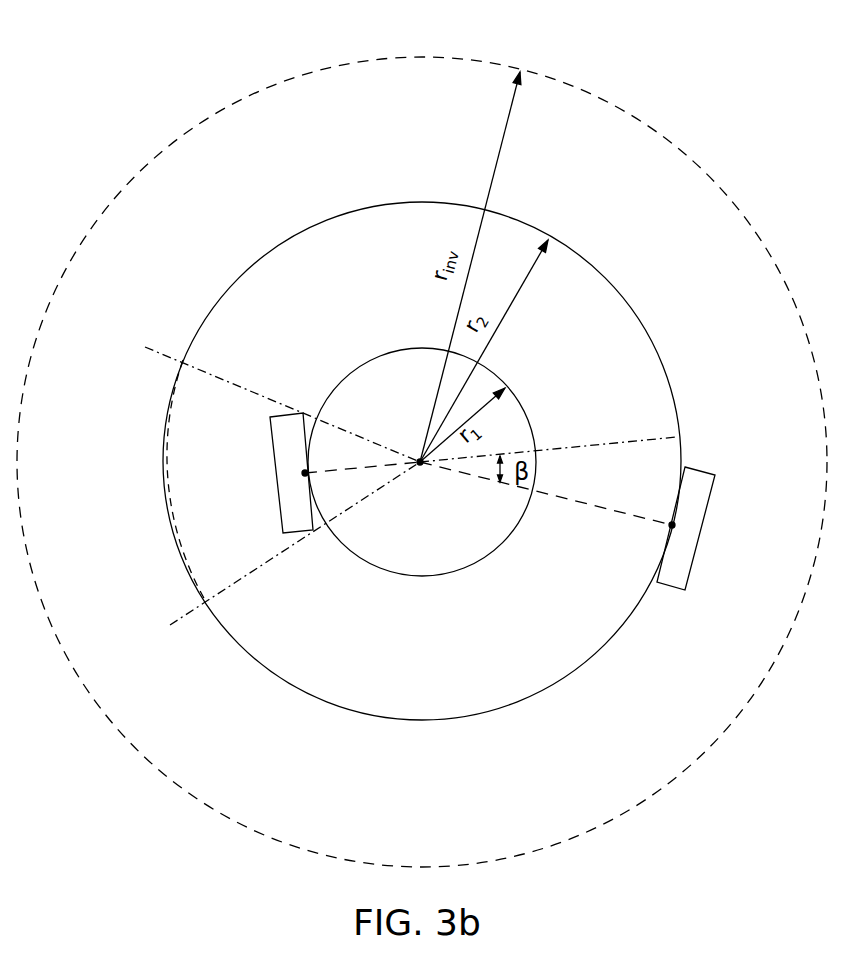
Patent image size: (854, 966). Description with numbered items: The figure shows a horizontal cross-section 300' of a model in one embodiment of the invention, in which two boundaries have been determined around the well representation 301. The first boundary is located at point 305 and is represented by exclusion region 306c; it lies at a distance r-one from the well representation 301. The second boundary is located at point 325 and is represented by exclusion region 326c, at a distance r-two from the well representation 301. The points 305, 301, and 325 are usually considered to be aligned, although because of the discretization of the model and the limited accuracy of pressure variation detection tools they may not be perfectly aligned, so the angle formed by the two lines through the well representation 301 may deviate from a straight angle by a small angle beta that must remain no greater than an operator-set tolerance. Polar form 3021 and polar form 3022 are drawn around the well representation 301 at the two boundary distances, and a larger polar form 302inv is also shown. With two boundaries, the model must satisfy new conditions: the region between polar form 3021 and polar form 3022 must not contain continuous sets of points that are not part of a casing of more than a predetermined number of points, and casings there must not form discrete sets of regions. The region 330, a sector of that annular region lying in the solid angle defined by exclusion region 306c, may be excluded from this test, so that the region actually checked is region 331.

The horizontal cross-section 300' is at (422, 443).
The well representation 301 is at (421, 464).
The first polar form 3021 is at (362, 364).
The second polar form 3022 is at (527, 700).
The polar form 302inv is at (205, 808).
The point 305 is at (303, 472).
The exclusion region 306c is at (291, 508).
The point 325 is at (670, 527).
The exclusion region 326c is at (668, 580).
The region 330 is at (182, 417).
The region 331 is at (316, 687).